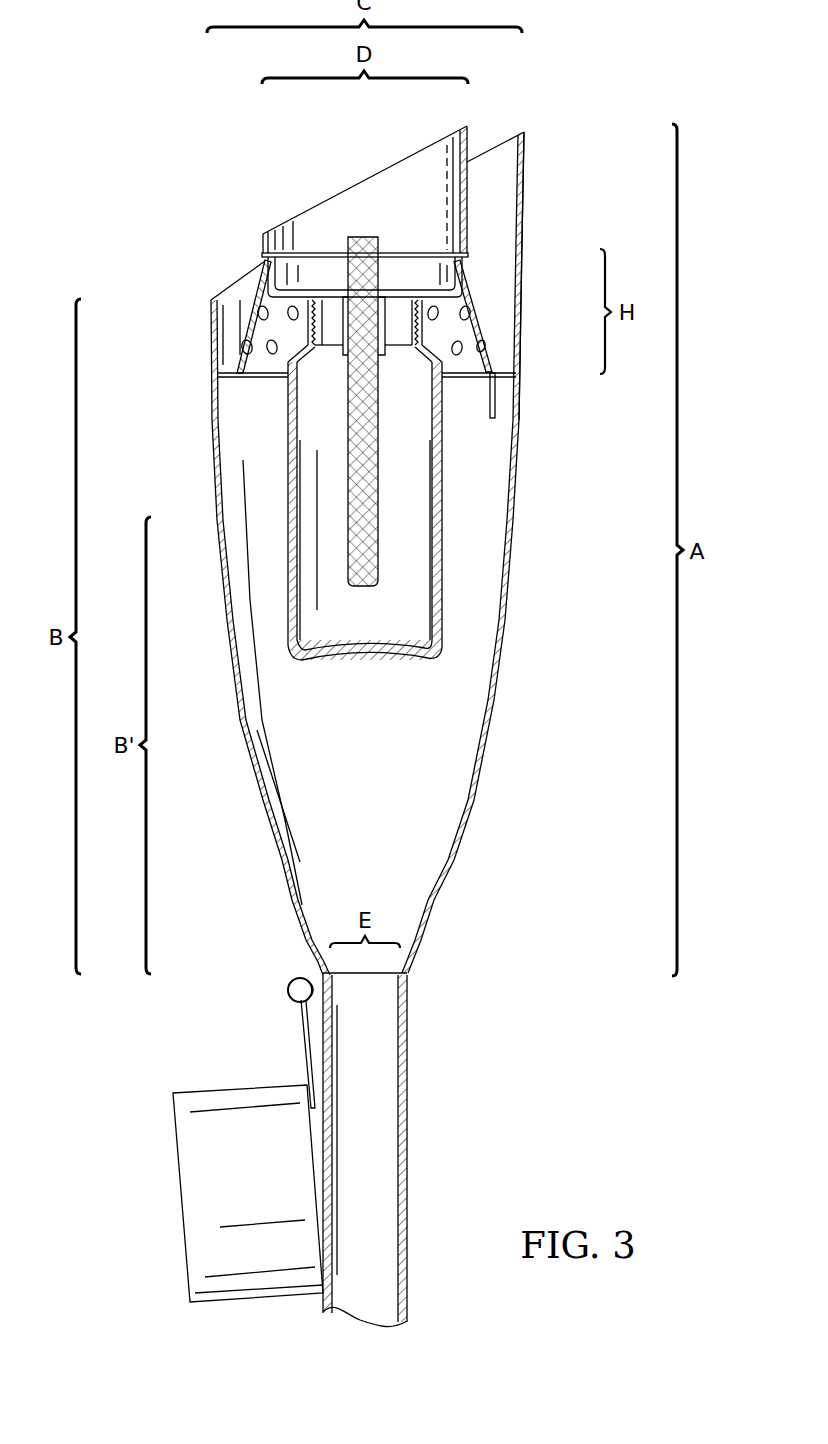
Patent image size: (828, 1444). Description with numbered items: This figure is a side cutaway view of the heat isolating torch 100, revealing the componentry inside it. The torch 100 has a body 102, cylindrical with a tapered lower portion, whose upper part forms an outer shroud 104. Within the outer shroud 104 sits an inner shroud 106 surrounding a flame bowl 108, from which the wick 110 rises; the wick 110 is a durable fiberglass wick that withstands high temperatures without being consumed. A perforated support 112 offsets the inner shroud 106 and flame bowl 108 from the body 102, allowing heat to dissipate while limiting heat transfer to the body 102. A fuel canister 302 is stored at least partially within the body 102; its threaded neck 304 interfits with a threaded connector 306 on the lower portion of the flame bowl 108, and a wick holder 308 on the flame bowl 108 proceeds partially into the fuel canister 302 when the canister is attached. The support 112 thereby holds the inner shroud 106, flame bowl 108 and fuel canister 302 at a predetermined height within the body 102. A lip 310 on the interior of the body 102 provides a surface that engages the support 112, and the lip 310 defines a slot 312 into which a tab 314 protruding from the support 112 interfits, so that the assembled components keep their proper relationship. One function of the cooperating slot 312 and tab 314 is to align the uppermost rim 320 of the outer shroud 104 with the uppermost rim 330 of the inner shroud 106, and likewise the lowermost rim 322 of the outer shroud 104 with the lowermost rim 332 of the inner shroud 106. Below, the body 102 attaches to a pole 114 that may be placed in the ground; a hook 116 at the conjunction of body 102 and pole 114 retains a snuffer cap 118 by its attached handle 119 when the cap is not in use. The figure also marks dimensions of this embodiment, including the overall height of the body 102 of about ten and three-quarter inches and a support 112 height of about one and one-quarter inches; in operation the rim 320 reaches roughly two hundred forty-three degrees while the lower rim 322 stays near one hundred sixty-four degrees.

The torch 100 is at (212, 146).
The body 102 is at (492, 733).
The outer shroud 104 is at (527, 160).
The inner shroud 106 is at (372, 170).
The flame bowl 108 is at (320, 268).
The wick 110 is at (380, 260).
The support 112 is at (255, 290).
The pole 114 is at (409, 1155).
The hook 116 is at (297, 980).
The snuffer cap 118 is at (180, 1198).
The handle 119 is at (304, 1043).
The fuel canister 302 is at (360, 663).
The threaded neck 304 is at (412, 348).
The threaded connector 306 is at (308, 352).
The wick holder 308 is at (392, 305).
The lip 310 is at (240, 380).
The slot 312 is at (494, 366).
The tab 314 is at (492, 419).
The uppermost rim of the outer shroud 320 is at (530, 127).
The lowermost rim of the outer shroud 322 is at (201, 300).
The uppermost rim of the inner shroud 330 is at (473, 122).
The lowermost rim of the inner shroud 332 is at (258, 228).